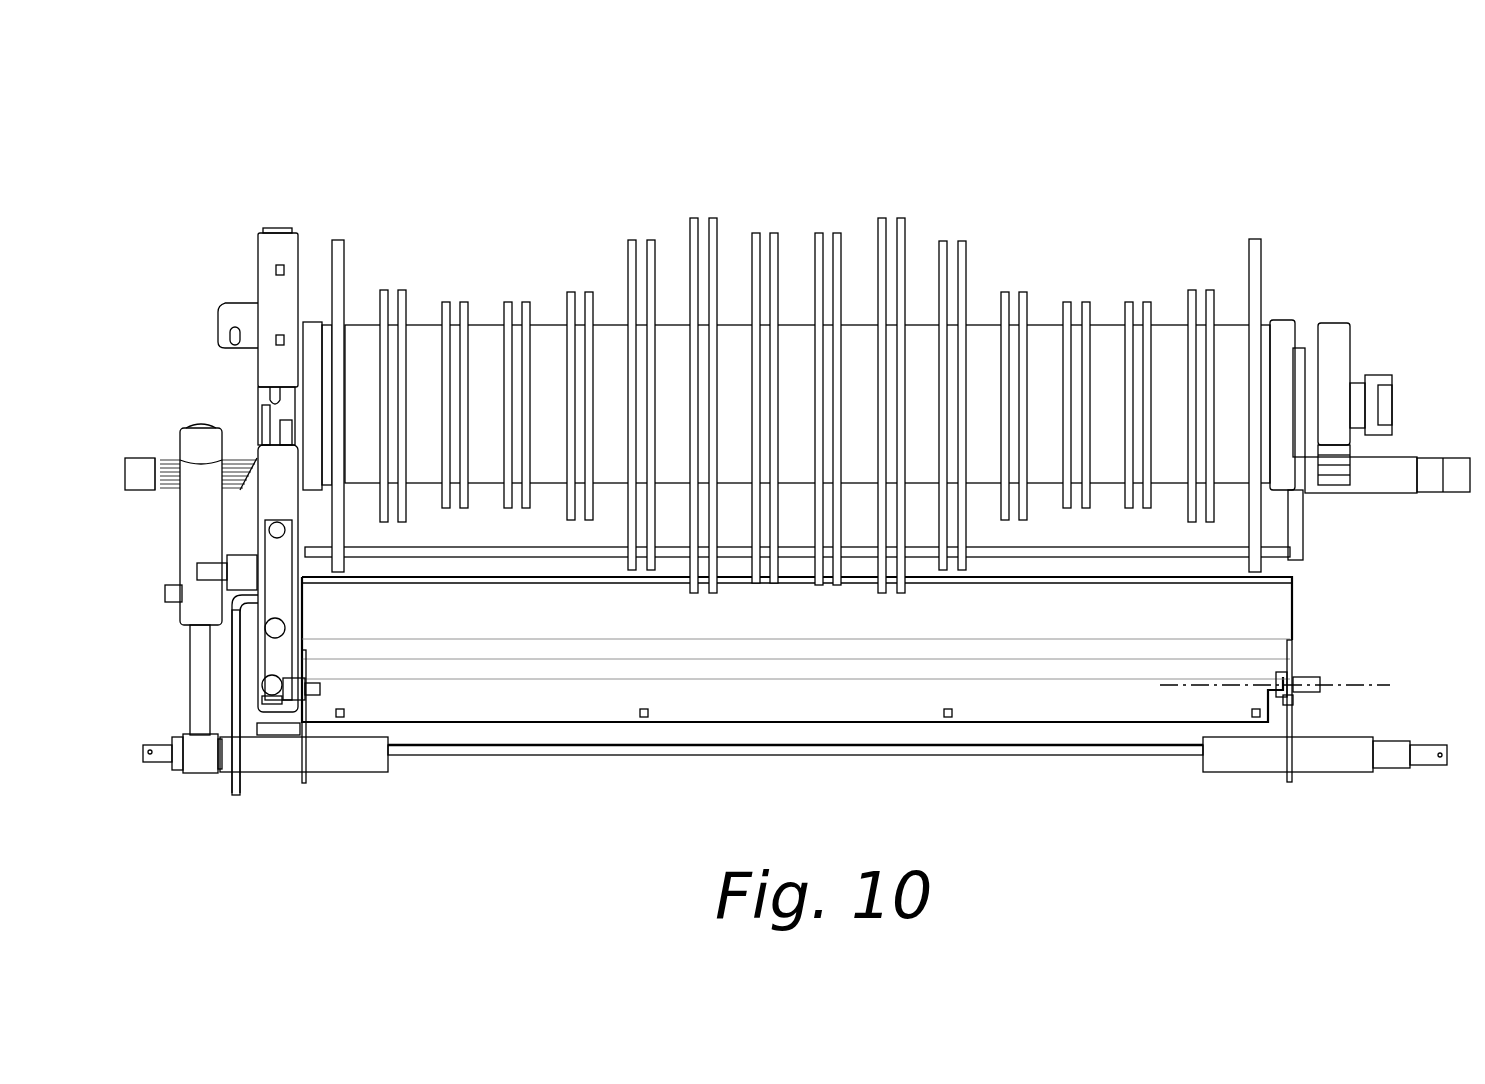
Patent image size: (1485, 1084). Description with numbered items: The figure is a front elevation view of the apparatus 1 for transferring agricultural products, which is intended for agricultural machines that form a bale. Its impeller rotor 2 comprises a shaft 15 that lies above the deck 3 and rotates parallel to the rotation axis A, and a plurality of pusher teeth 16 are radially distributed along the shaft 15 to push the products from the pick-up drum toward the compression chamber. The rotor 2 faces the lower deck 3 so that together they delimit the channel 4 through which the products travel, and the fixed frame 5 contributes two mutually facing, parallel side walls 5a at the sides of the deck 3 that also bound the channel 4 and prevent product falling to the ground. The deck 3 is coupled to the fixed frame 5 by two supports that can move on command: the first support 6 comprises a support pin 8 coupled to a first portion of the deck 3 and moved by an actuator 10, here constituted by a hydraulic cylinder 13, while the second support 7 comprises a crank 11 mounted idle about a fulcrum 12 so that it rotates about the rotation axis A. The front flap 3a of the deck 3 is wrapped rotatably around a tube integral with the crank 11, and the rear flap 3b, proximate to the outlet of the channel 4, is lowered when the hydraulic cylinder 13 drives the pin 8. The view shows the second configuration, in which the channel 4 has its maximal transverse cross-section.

The apparatus for transferring agricultural products 1 is at (1192, 176).
The impeller rotor 2 is at (985, 292).
The deck 3 is at (833, 669).
The front flap 3a is at (775, 690).
The rear flap 3b is at (546, 580).
The channel 4 is at (625, 620).
The fixed frame 5 is at (256, 427).
The side walls 5a is at (298, 255).
The first support 6 is at (175, 768).
The second support 7 is at (308, 708).
The support pin 8 is at (200, 760).
The actuator 10 is at (177, 644).
The crank 11 is at (302, 690).
The fulcrum 12 is at (275, 692).
The hydraulic cylinder 13 is at (202, 513).
The shaft 15 is at (1168, 325).
The pusher teeth 16 is at (506, 302).
The rotation axis A is at (1185, 682).